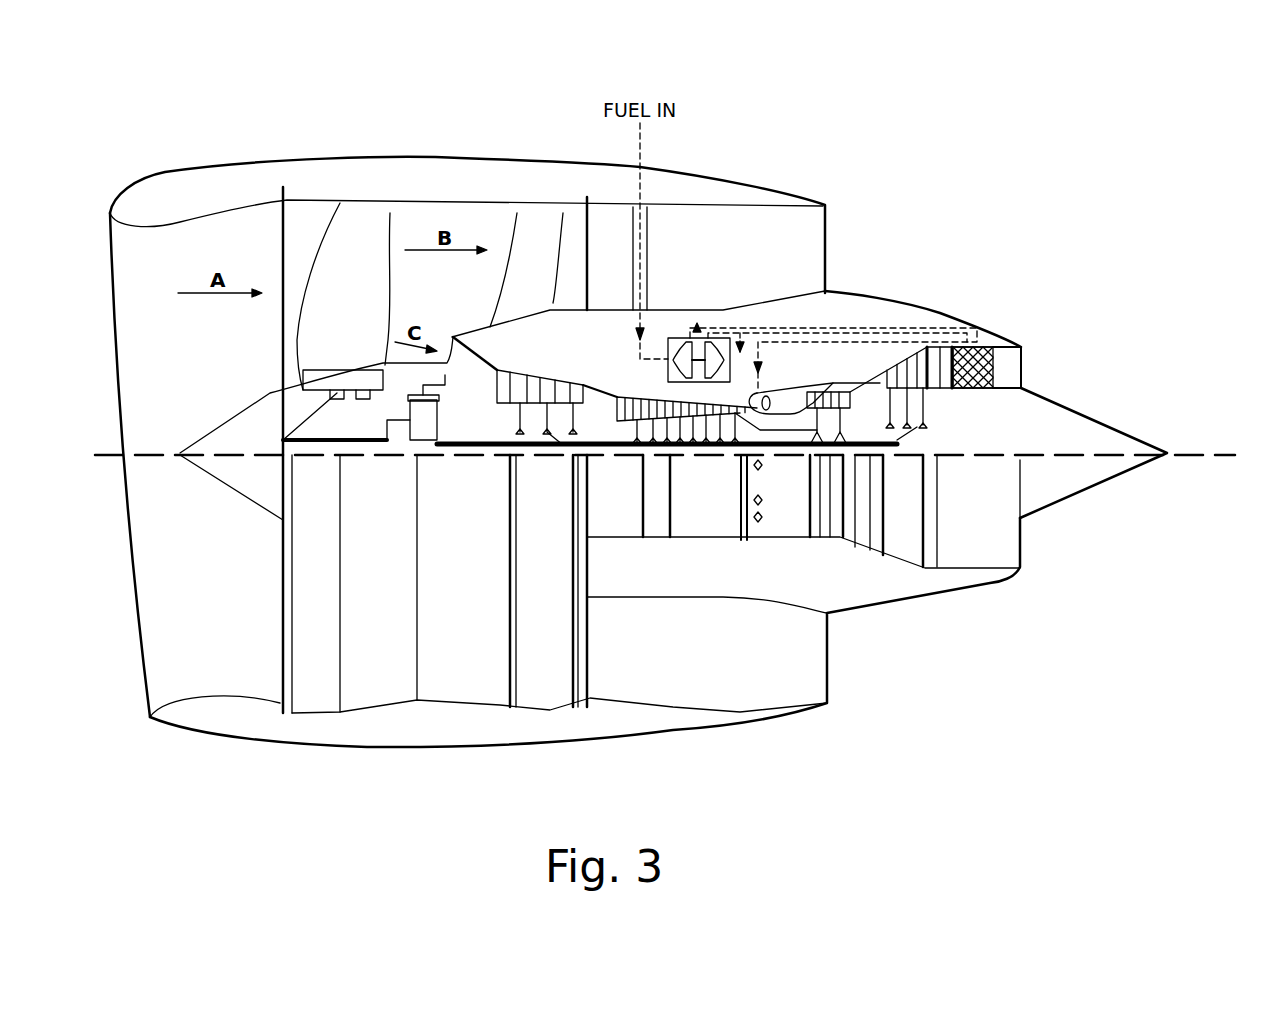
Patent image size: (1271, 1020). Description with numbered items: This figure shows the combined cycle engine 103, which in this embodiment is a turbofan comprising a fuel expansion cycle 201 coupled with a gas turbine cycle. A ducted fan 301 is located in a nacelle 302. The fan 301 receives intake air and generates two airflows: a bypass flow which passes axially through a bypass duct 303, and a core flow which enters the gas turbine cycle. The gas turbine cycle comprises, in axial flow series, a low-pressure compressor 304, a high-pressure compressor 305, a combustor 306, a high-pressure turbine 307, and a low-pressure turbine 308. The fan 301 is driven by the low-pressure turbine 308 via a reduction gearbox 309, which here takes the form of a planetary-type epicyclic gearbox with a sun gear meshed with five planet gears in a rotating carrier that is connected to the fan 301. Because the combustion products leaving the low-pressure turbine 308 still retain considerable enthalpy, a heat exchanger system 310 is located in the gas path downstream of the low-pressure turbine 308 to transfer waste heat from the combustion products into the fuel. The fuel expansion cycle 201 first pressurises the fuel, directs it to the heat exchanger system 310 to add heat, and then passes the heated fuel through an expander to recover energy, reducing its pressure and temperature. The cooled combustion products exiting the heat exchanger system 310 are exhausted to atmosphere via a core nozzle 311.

The engine 103 is at (148, 98).
The nacelle 302 is at (147, 192).
The ducted fan 301 is at (370, 319).
The bypass duct 303 is at (466, 302).
The fuel expansion cycle 201 is at (672, 338).
The low-pressure compressor 304 is at (520, 378).
The high-pressure compressor 305 is at (628, 392).
The combustor 306 is at (800, 385).
The high-pressure turbine 307 is at (845, 388).
The low-pressure turbine 308 is at (928, 388).
The reduction gearbox 309 is at (413, 428).
The heat exchanger system 310 is at (1000, 388).
The core nozzle 311 is at (1012, 357).